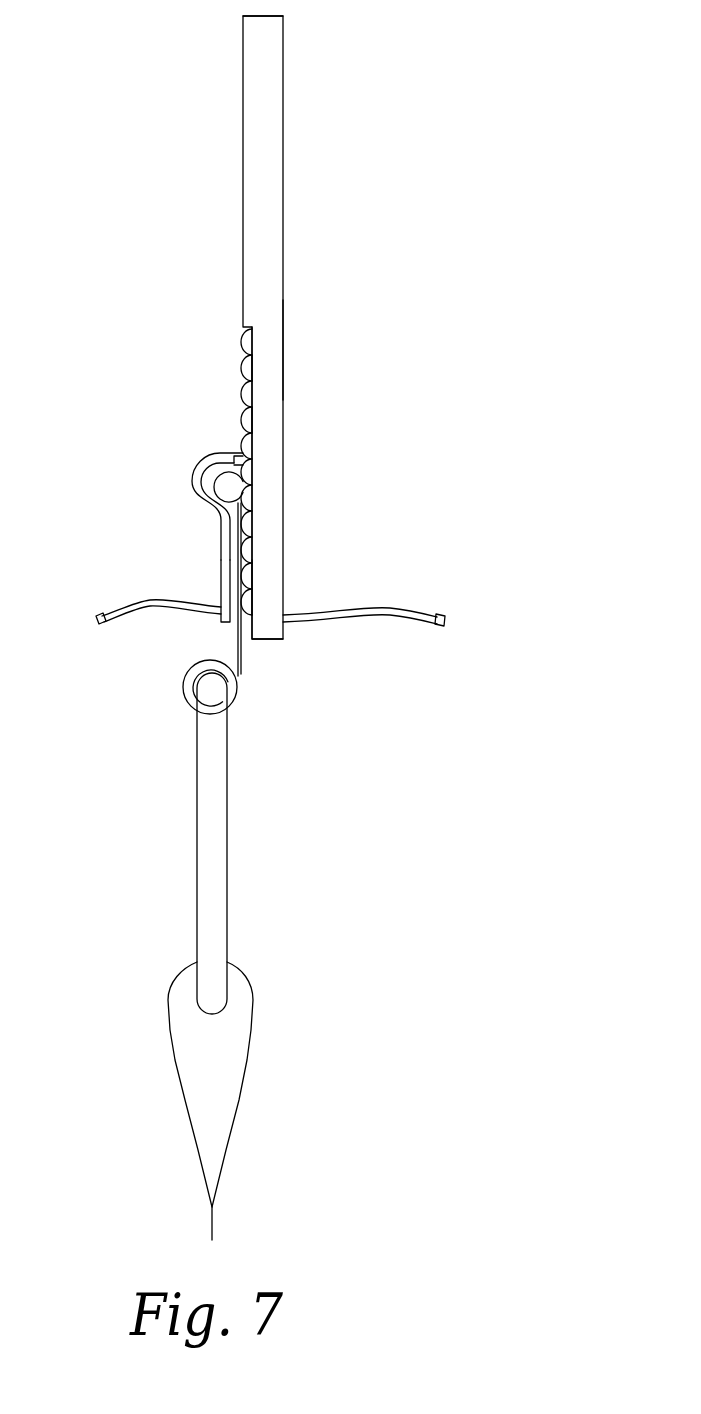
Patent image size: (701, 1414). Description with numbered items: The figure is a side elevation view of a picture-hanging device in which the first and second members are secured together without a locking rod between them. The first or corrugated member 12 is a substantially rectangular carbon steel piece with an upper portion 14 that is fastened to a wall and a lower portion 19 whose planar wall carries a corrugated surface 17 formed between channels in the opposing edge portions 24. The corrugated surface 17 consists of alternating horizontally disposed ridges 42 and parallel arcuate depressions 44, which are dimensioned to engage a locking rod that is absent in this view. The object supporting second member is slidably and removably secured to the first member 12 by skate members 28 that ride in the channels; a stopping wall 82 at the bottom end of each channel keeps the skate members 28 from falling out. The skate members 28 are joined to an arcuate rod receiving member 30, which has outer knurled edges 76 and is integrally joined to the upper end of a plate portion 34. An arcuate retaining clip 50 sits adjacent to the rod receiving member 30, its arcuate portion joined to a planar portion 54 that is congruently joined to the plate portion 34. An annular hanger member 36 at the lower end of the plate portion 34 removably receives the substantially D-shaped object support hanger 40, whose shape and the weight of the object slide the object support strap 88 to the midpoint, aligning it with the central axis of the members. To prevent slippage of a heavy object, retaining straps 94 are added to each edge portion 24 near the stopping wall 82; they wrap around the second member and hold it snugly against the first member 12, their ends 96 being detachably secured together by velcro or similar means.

The first or corrugated member 12 is at (283, 73).
The upper portion 14 is at (251, 102).
The lower portion 19 is at (283, 352).
The corrugated surface 17 is at (250, 433).
The edge portions 24 is at (268, 514).
The ridges 42 is at (248, 377).
The arcuate depressions 44 is at (247, 382).
The skate members 28 is at (245, 458).
The arcuate rod receiving member 30 is at (200, 463).
The arcuate retaining clip 50 is at (203, 474).
The outer knurled edges 76 is at (205, 478).
The planar portion 54 is at (220, 573).
The retaining straps 94 is at (140, 602).
The ends 96 is at (101, 623).
The plate portion 34 is at (237, 655).
The annular hanger member 36 is at (187, 695).
The stopping wall 82 is at (240, 688).
The object support hanger 40 is at (215, 866).
The object support strap 88 is at (240, 1086).